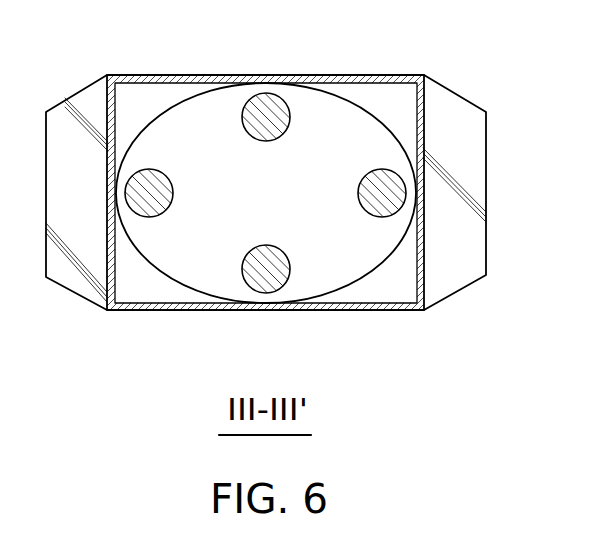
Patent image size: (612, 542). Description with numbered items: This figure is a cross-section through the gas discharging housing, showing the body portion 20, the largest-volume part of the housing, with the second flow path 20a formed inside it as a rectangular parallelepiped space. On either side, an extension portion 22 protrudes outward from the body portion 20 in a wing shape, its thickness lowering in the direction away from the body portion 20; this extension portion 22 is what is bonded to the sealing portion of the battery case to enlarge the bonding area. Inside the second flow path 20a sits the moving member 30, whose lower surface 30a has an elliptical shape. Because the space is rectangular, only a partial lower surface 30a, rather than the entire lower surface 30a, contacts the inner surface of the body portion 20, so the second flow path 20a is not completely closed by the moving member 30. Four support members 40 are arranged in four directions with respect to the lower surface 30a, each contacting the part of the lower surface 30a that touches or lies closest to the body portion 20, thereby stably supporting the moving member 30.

The body portion 20 is at (306, 195).
The second flow path 20a is at (128, 105).
The extension portion 22 is at (450, 283).
The moving member 30 is at (266, 161).
The lower surface 30a is at (353, 108).
The support member 40 is at (378, 213).